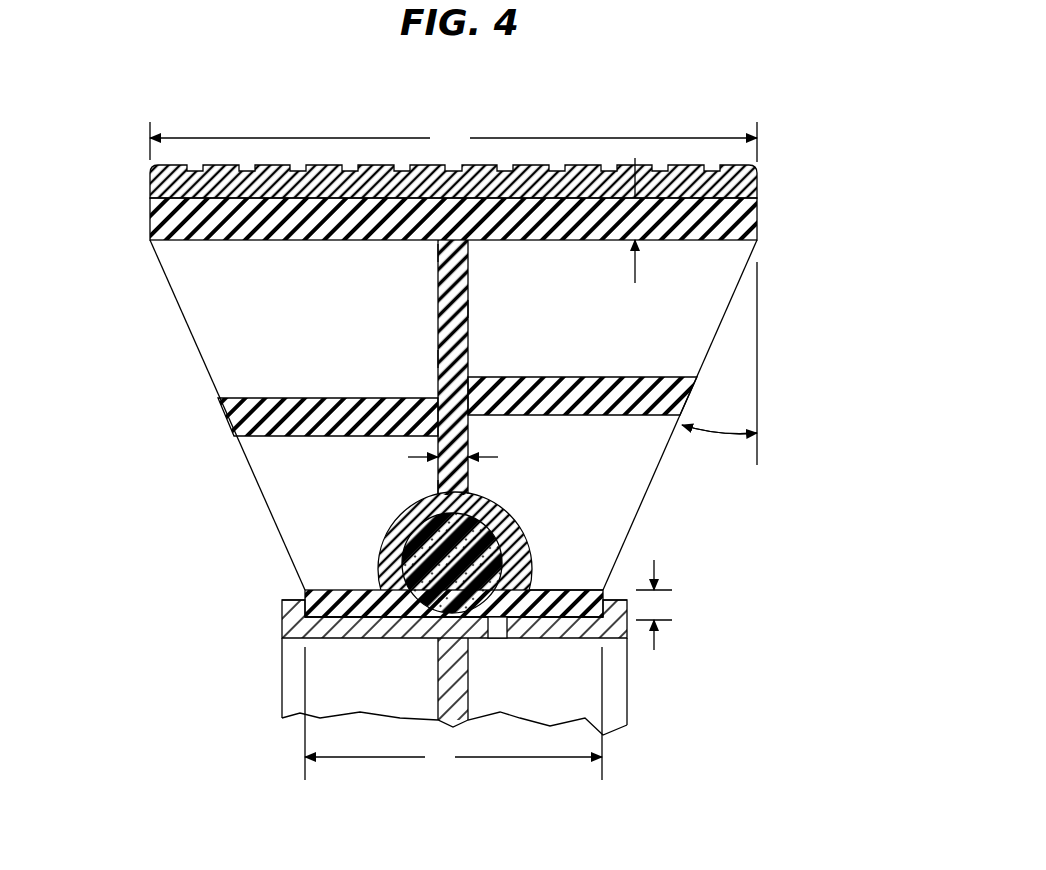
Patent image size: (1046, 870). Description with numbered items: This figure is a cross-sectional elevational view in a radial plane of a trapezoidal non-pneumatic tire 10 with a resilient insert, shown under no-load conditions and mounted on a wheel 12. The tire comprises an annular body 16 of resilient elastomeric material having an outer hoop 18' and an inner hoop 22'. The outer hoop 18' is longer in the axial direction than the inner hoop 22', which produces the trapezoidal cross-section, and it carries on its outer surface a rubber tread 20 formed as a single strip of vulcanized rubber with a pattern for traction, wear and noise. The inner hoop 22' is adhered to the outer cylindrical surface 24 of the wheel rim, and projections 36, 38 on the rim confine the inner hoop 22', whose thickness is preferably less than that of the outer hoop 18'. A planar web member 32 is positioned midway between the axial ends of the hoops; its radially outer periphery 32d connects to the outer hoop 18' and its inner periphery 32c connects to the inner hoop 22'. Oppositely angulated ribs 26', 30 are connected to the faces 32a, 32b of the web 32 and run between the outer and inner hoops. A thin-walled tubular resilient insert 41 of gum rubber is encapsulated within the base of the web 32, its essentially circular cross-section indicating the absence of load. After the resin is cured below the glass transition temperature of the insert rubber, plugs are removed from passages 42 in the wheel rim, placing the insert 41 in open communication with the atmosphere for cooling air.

The non-pneumatic tire 10 is at (480, 413).
The wheel 12 is at (650, 714).
The annular body 16 is at (184, 320).
The outer hoop 18' is at (490, 219).
The rubber tread 20 is at (757, 172).
The inner hoop 22' is at (419, 577).
The outer cylindrical surface 24 is at (367, 616).
The rib 26' is at (291, 417).
The rib 30 is at (528, 377).
The web member 32 is at (438, 306).
The web face 32a is at (438, 358).
The web face 32b is at (468, 308).
The inner periphery of web 32c is at (364, 580).
The outer periphery of web 32d is at (438, 250).
The projection 36 is at (282, 600).
The projection 38 is at (617, 598).
The thin-walled tubular resilient insert 41 is at (530, 589).
The passages 42 is at (498, 639).